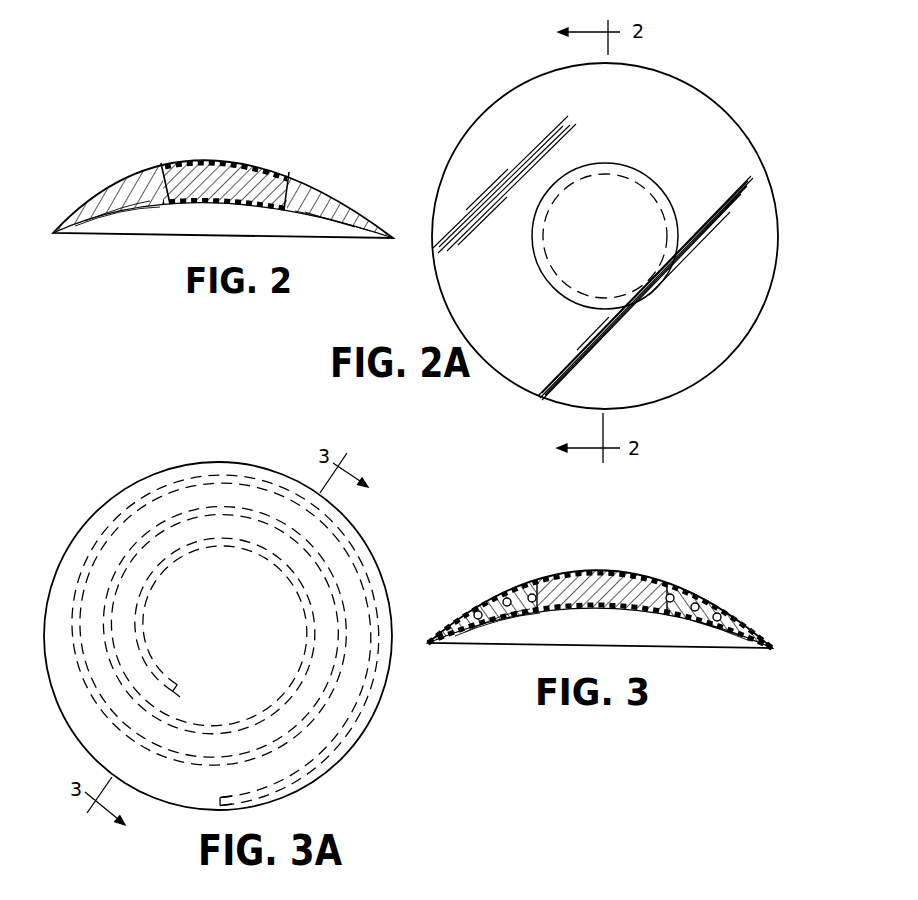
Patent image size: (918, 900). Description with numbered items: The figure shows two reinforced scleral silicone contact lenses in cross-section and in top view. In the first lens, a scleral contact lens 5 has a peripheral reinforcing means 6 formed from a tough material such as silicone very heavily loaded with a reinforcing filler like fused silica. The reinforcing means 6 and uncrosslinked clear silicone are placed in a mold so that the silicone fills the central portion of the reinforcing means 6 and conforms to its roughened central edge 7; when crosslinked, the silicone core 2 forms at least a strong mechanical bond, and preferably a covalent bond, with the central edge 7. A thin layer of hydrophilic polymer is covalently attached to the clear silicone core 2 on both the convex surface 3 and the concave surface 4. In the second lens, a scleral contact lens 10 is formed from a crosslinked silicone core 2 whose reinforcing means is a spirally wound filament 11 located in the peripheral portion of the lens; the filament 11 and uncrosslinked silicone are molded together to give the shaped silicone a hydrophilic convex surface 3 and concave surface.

In FIG. 2, the silicone core 2 is at (256, 173).
In FIG. 2A, the silicone core 2 is at (628, 238).
In FIG. 3, the silicone core 2 is at (583, 580).
In FIG. 2, the convex surface 3 is at (203, 160).
In FIG. 2A, the convex surface 3 is at (558, 232).
In FIG. 3, the convex surface 3 is at (628, 571).
In FIG. 2, the concave surface 4 is at (280, 207).
In FIG. 3, the concave surface 4 is at (697, 622).
In FIG. 2, the scleral contact lens 5 is at (155, 240).
In FIG. 2A, the scleral contact lens 5 is at (493, 99).
In FIG. 2, the peripheral reinforcing means 6 is at (112, 193).
In FIG. 2A, the peripheral reinforcing means 6 is at (680, 357).
In FIG. 2, the roughened central edge 7 is at (168, 182).
In FIG. 2A, the roughened central edge 7 is at (664, 194).
In FIG. 3, the scleral contact lens 10 is at (666, 577).
In FIG. 3A, the scleral contact lens 10 is at (372, 725).
In FIG. 3, the spirally wound filament 11 is at (479, 613).
In FIG. 3A, the spirally wound filament 11 is at (136, 512).